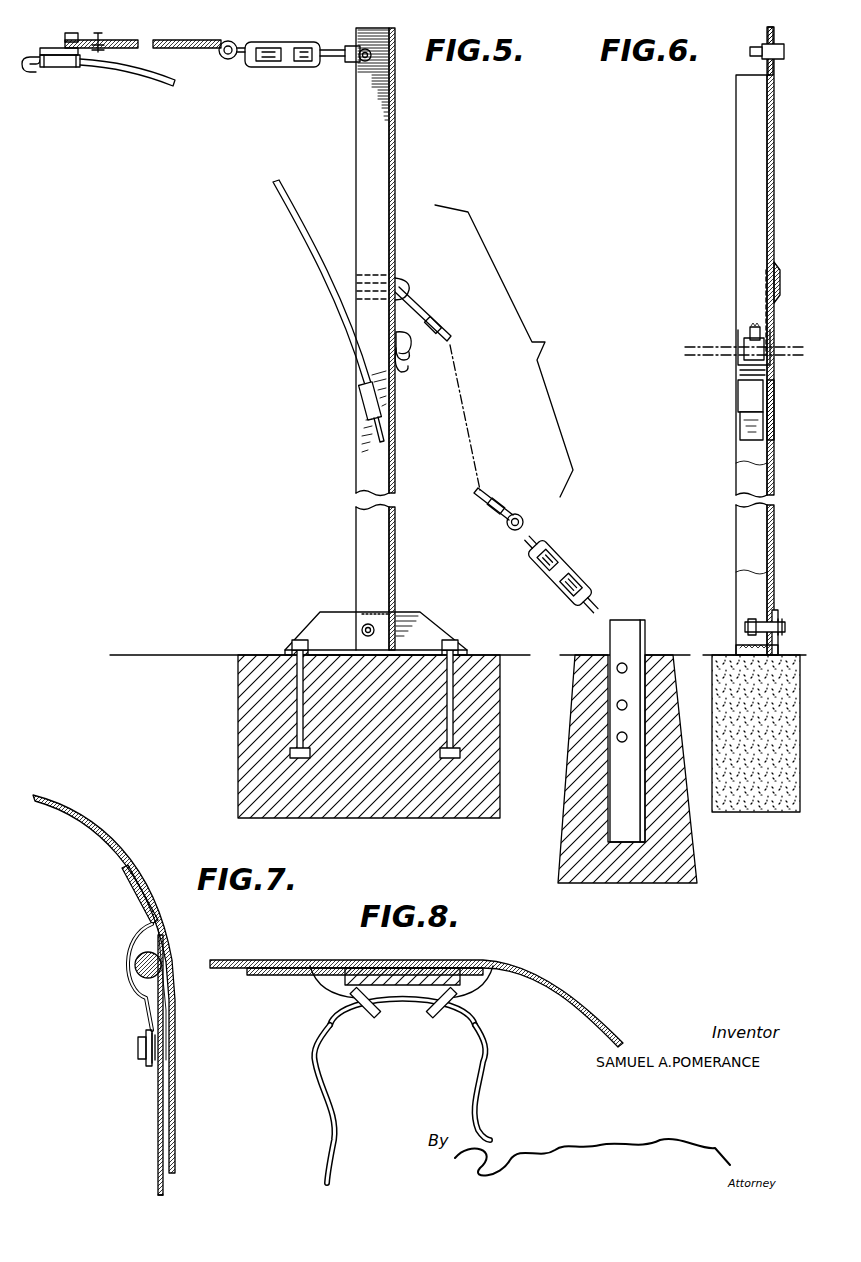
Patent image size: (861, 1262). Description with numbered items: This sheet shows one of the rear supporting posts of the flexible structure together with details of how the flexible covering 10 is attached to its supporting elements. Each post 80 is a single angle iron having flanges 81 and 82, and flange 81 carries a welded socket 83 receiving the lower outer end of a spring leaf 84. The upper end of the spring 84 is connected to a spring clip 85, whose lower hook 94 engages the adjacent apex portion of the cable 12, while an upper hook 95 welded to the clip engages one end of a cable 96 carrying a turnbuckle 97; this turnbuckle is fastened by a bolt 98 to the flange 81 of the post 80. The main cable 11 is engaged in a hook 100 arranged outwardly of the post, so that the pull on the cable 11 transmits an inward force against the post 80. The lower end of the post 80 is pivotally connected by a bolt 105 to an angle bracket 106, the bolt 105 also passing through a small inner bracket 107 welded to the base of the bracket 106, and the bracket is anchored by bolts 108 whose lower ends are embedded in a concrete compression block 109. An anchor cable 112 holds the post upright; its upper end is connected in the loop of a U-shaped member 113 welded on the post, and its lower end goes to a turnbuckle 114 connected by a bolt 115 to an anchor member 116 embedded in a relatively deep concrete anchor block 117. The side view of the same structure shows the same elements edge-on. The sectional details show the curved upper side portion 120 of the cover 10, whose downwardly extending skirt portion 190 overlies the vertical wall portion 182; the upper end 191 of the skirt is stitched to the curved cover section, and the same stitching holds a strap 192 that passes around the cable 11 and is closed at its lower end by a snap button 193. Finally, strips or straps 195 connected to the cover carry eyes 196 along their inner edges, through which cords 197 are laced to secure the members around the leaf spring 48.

In FIG. 8, the flexible covering 10 is at (300, 953).
In FIG. 5, the main cable 11 is at (410, 360).
In FIG. 6, the main cable 11 is at (708, 360).
In FIG. 7, the main cable 11 is at (136, 973).
In FIG. 5, the cable 12 is at (45, 66).
In FIG. 8, the leaf spring 48 is at (412, 972).
In FIG. 5, the post 80 is at (403, 165).
In FIG. 6, the post 80 is at (729, 230).
In FIG. 5, the flange 81 is at (366, 122).
In FIG. 6, the flange 81 is at (772, 409).
In FIG. 5, the flange 82 is at (396, 118).
In FIG. 6, the flange 82 is at (750, 161).
In FIG. 5, the socket 83 is at (362, 402).
In FIG. 6, the socket 83 is at (740, 401).
In FIG. 5, the spring leaf 84 is at (338, 308).
In FIG. 6, the spring leaf 84 is at (740, 437).
In FIG. 5, the spring clip 85 is at (38, 52).
In FIG. 5, the lower hook 94 is at (30, 70).
In FIG. 5, the upper hook 95 is at (78, 40).
In FIG. 5, the cable 96 is at (172, 36).
In FIG. 5, the turnbuckle 97 is at (256, 67).
In FIG. 5, the bolt 98 is at (353, 63).
In FIG. 6, the bolt 98 is at (783, 60).
In FIG. 5, the hook 100 is at (402, 374).
In FIG. 6, the hook 100 is at (750, 333).
In FIG. 5, the bolt 105 is at (375, 625).
In FIG. 6, the bolt 105 is at (745, 629).
In FIG. 5, the angle bracket 106 is at (430, 621).
In FIG. 6, the angle bracket 106 is at (780, 640).
In FIG. 5, the inner bracket 107 is at (365, 612).
In FIG. 6, the inner bracket 107 is at (752, 616).
In FIG. 5, the bolts 108 is at (300, 640).
In FIG. 5, the concrete compression block 109 is at (250, 660).
In FIG. 6, the concrete compression block 109 is at (758, 800).
In FIG. 5, the anchor cable 112 is at (432, 322).
In FIG. 5, the U-shaped member 113 is at (400, 280).
In FIG. 6, the U-shaped member 113 is at (778, 276).
In FIG. 5, the turnbuckle 114 is at (562, 552).
In FIG. 5, the bolt 115 is at (633, 613).
In FIG. 5, the anchor member 116 is at (646, 628).
In FIG. 5, the anchor block 117 is at (650, 656).
In FIG. 7, the upper side portion 120 is at (110, 870).
In FIG. 7, the vertical wall portion 182 is at (166, 1201).
In FIG. 7, the skirt portion 190 is at (165, 1138).
In FIG. 7, the upper end 191 is at (124, 868).
In FIG. 7, the strap 192 is at (146, 939).
In FIG. 7, the button 193 is at (140, 1055).
In FIG. 8, the strips or straps 195 is at (325, 976).
In FIG. 8, the eyes 196 is at (372, 1018).
In FIG. 8, the cords 197 is at (330, 1030).